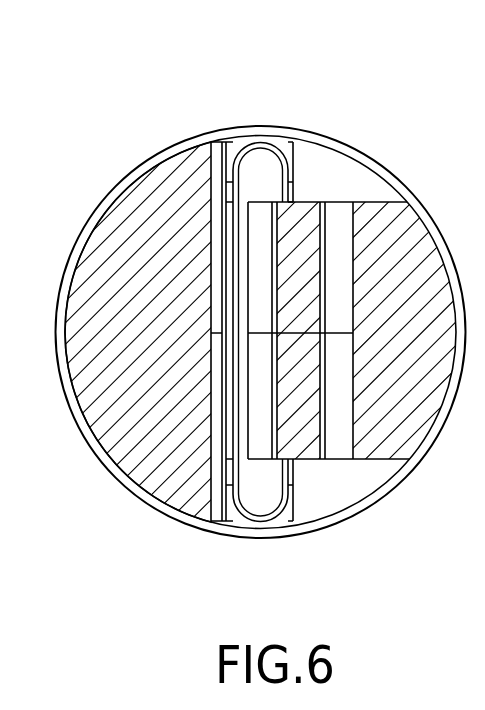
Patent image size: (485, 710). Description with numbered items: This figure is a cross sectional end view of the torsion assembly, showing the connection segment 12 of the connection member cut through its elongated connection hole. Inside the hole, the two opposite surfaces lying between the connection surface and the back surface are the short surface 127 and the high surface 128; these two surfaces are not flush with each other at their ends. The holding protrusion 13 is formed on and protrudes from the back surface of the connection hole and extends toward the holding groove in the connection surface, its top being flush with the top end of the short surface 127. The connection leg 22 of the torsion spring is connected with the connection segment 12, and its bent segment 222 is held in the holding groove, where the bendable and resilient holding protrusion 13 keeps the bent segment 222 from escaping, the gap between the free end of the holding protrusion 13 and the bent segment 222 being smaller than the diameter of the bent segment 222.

The connection segment 12 is at (128, 222).
The high surface 128 is at (215, 173).
The connection leg 22 is at (271, 271).
The bent segment 222 is at (268, 173).
The holding protrusion 13 is at (298, 203).
The short surface 127 is at (356, 218).